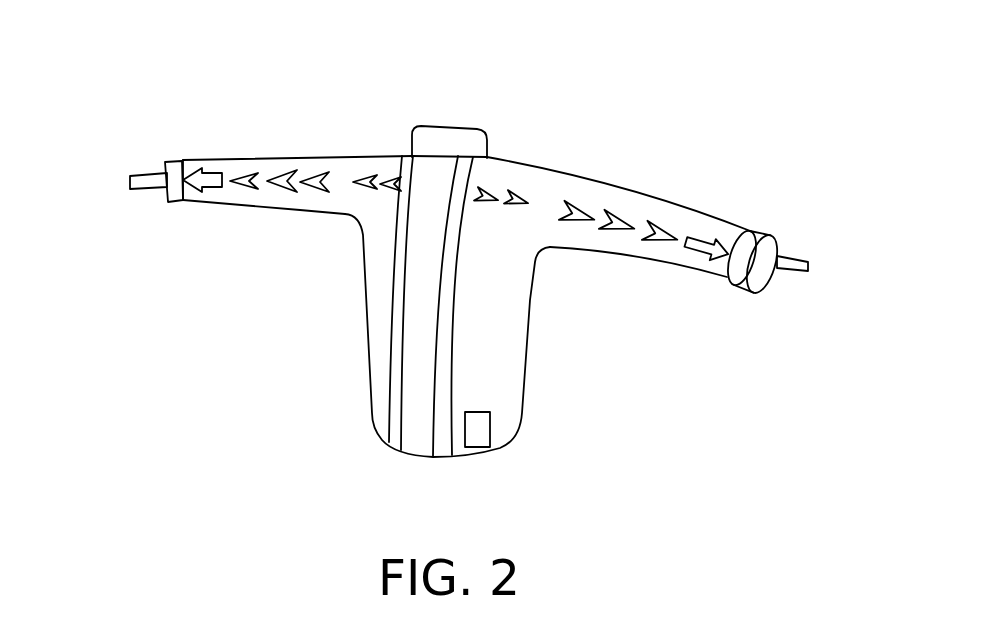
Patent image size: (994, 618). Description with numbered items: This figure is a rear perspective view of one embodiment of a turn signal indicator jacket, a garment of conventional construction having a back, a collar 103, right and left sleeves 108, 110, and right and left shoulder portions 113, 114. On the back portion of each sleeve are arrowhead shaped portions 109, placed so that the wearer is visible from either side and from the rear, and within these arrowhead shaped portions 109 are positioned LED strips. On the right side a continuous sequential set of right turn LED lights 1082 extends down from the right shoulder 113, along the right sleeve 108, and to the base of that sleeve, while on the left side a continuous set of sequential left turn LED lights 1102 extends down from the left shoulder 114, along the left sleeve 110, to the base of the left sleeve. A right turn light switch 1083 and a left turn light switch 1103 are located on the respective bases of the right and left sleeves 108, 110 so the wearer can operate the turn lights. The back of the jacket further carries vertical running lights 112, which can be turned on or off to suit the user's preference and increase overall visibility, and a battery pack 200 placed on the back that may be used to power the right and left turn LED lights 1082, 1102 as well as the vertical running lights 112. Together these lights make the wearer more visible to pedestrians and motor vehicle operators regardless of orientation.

The collar 103 is at (457, 143).
The right sleeve 108 is at (583, 237).
The arrowhead shaped portion 109 is at (289, 165).
The left sleeve 110 is at (293, 197).
The vertical running lights 112 is at (397, 393).
The right shoulder portion 113 is at (527, 165).
The left shoulder portion 114 is at (378, 157).
The battery pack 200 is at (478, 450).
The right turn LED lights 1082 is at (667, 230).
The right turn light switch 1083 is at (812, 267).
The left turn LED lights 1102 is at (250, 177).
The left turn light switch 1103 is at (128, 182).